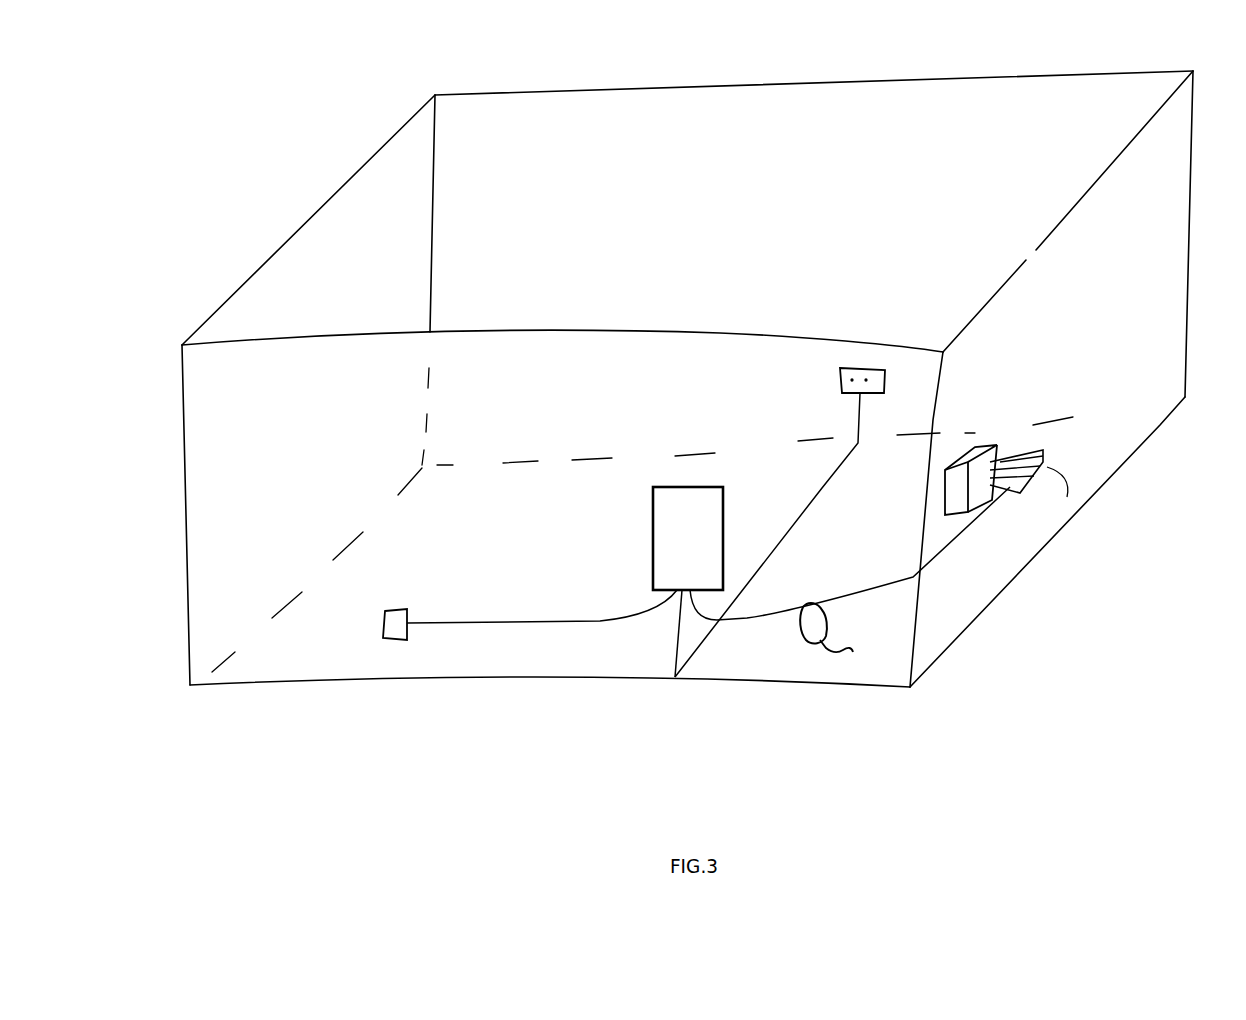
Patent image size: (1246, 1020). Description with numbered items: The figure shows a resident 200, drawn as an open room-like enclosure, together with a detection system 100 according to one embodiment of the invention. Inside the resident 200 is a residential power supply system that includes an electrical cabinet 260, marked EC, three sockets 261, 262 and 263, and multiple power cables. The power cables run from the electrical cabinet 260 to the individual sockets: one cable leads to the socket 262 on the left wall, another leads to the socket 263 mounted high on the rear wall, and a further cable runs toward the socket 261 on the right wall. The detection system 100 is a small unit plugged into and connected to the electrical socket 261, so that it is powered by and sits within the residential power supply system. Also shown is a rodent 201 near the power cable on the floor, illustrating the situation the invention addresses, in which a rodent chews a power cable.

The detection system 100 is at (983, 431).
The resident 200 is at (1108, 618).
The rodent 201 is at (808, 649).
The electrical cabinet 260 is at (673, 561).
The electrical socket 261 is at (1035, 508).
The electrical socket 262 is at (392, 655).
The electrical socket 263 is at (880, 358).